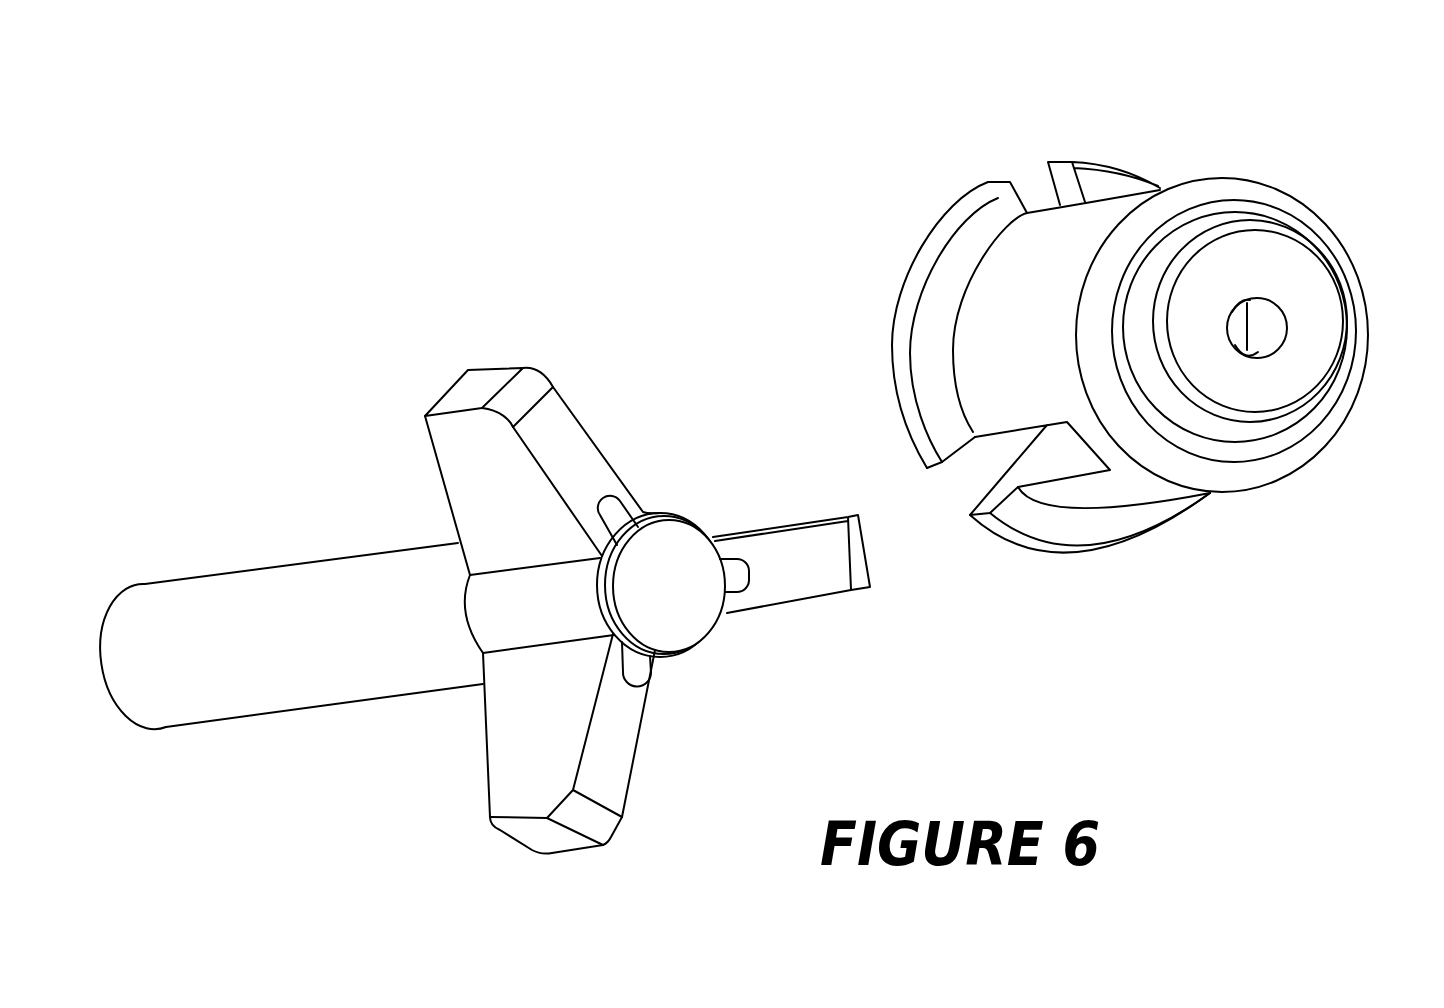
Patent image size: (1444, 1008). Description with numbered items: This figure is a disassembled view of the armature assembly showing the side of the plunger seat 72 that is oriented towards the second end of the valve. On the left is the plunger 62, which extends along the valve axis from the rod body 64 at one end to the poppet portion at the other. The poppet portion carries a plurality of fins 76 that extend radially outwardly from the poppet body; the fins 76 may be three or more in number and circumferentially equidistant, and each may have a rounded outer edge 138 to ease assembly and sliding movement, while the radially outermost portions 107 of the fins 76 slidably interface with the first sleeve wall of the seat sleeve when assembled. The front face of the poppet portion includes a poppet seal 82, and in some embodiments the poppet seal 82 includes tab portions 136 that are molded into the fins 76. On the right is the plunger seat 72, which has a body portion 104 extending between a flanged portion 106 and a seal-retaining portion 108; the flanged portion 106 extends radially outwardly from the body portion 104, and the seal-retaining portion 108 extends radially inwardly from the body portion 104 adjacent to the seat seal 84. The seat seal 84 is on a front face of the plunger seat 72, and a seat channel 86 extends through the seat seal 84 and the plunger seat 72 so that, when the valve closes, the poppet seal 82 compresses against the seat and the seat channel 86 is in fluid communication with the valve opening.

The plunger 62 is at (261, 535).
The rod body 64 is at (231, 664).
The fins 76 is at (468, 483).
The radially outermost portions 107 is at (460, 392).
The rounded outer edge 138 is at (522, 387).
The poppet seal 82 is at (693, 613).
The tab portions 136 is at (637, 663).
The plunger seat 72 is at (1252, 184).
The body portion 104 is at (1087, 230).
The flanged portion 106 is at (961, 213).
The seal-retaining portion 108 is at (1260, 435).
The seat seal 84 is at (1317, 342).
The seat channel 86 is at (1262, 322).